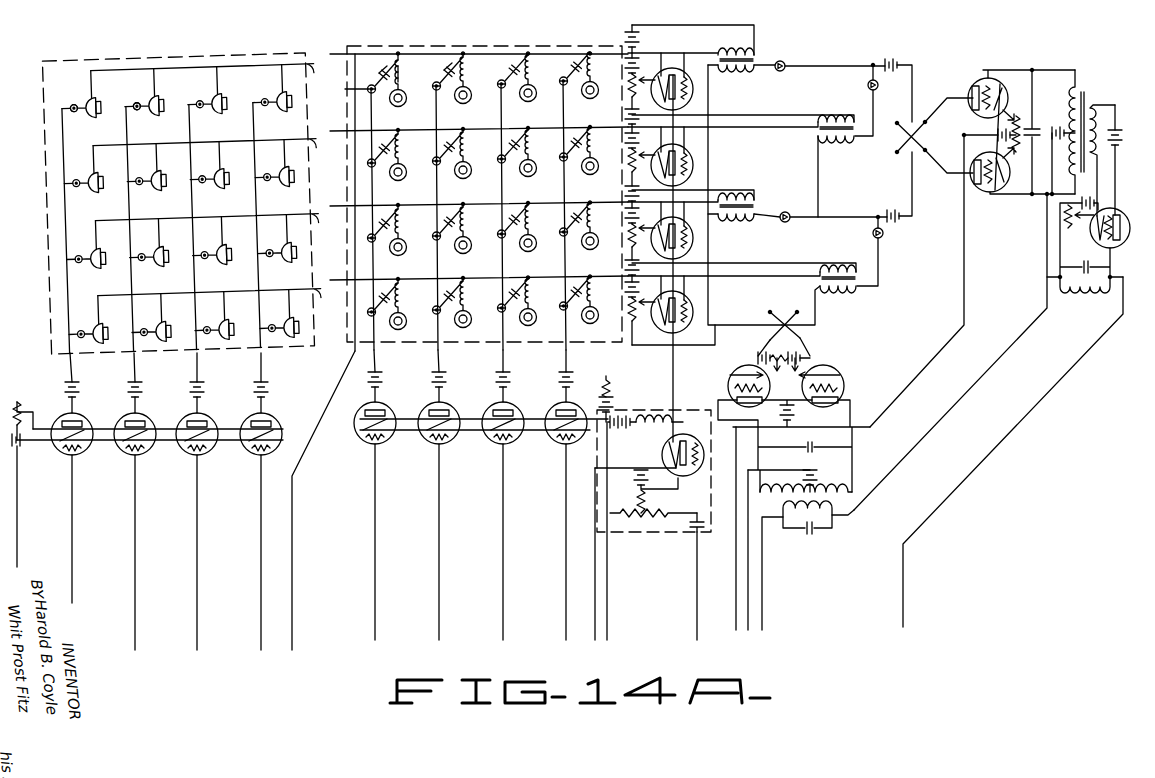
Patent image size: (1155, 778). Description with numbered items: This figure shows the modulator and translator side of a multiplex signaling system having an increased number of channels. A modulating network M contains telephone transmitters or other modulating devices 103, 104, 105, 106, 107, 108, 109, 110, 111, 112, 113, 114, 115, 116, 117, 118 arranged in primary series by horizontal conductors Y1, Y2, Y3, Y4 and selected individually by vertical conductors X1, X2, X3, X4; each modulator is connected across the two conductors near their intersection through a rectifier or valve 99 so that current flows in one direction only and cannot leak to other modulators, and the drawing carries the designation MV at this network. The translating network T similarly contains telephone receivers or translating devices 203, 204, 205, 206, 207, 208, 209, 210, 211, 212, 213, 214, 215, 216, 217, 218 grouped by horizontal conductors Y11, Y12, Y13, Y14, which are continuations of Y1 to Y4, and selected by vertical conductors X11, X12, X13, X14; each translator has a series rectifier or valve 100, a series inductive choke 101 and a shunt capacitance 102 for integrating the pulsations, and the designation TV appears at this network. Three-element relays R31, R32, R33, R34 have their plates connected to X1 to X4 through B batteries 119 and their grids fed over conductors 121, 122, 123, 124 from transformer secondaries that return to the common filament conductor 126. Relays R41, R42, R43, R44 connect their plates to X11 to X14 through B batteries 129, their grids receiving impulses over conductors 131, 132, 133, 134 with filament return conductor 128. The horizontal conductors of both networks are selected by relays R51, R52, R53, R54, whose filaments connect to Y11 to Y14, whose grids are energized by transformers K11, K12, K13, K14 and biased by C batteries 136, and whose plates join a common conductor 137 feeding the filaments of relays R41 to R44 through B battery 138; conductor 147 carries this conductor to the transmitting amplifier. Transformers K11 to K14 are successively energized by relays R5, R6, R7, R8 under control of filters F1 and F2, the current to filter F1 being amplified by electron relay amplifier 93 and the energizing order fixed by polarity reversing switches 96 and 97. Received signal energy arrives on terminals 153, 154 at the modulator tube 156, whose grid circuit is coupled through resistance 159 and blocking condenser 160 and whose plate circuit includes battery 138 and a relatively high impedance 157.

The modulating network M is at (184, 73).
The translating network T is at (482, 65).
The microphone terminal MV is at (67, 100).
The rectifier or valve 99 is at (142, 98).
The telephone transmitter 105 is at (88, 117).
The telephone transmitter 103 is at (151, 116).
The telephone transmitter 106 is at (213, 115).
The telephone transmitter 104 is at (276, 112).
The telephone transmitter 109 is at (86, 192).
The telephone transmitter 107 is at (151, 190).
The telephone transmitter 110 is at (216, 188).
The telephone transmitter 108 is at (279, 186).
The telephone transmitter 113 is at (86, 248).
The telephone transmitter 111 is at (149, 246).
The telephone transmitter 114 is at (212, 245).
The telephone transmitter 112 is at (277, 242).
The telephone transmitter 117 is at (88, 321).
The telephone transmitter 115 is at (151, 319).
The telephone transmitter 118 is at (214, 318).
The telephone transmitter 116 is at (279, 316).
The horizontal conductor Y3 is at (208, 76).
The horizontal conductor Y4 is at (210, 152).
The horizontal conductor Y1 is at (215, 227).
The horizontal conductor Y2 is at (220, 306).
The vertical conductor X3 is at (70, 364).
The vertical conductor X1 is at (135, 364).
The vertical conductor X4 is at (197, 364).
The vertical conductor X2 is at (261, 364).
The B battery 119 is at (80, 392).
The relay R33 is at (80, 453).
The relay R31 is at (143, 453).
The relay R34 is at (205, 453).
The relay R32 is at (268, 452).
The common filament return conductor 126 is at (17, 531).
The conductor 123 is at (72, 579).
The conductor 121 is at (135, 579).
The conductor 124 is at (197, 578).
The conductor 122 is at (261, 598).
The conductor 147 is at (292, 601).
The transmitter terminal TV is at (348, 91).
The shunt capacitance 102 is at (391, 64).
The series inductive choke 101 is at (403, 80).
The series rectifier or valve 100 is at (445, 75).
The telephone receiver 205 is at (391, 94).
The telephone receiver 203 is at (457, 92).
The telephone receiver 206 is at (520, 89).
The telephone receiver 204 is at (579, 84).
The telephone receiver 209 is at (393, 168).
The telephone receiver 207 is at (458, 167).
The telephone receiver 210 is at (522, 165).
The telephone receiver 208 is at (579, 159).
The telephone receiver 213 is at (394, 242).
The telephone receiver 211 is at (459, 241).
The telephone receiver 214 is at (522, 239).
The telephone receiver 212 is at (580, 235).
The telephone receiver 217 is at (387, 312).
The telephone receiver 215 is at (452, 311).
The telephone receiver 218 is at (517, 309).
The telephone receiver 216 is at (579, 307).
The horizontal conductor Y13 is at (598, 52).
The horizontal conductor Y14 is at (479, 121).
The horizontal conductor Y11 is at (600, 205).
The horizontal conductor Y12 is at (608, 275).
The vertical conductor X13 is at (374, 350).
The vertical conductor X11 is at (438, 350).
The vertical conductor X14 is at (503, 349).
The vertical conductor X12 is at (566, 348).
The B battery 129 is at (384, 381).
The relay R43 is at (383, 446).
The relay R41 is at (446, 446).
The relay R44 is at (510, 446).
The relay R42 is at (558, 447).
The conductor 133 is at (375, 571).
The conductor 131 is at (439, 569).
The conductor 134 is at (503, 567).
The conductor 132 is at (566, 587).
The C battery 136 is at (636, 40).
The relay R53 is at (690, 98).
The relay R54 is at (696, 162).
The relay R51 is at (696, 246).
The relay R52 is at (696, 302).
The transformer K13 is at (735, 72).
The transformer K14 is at (840, 143).
The transformer K11 is at (738, 218).
The transformer K12 is at (840, 292).
The polarity reversing switch 96 is at (906, 156).
The polarity reversing switch 97 is at (787, 312).
The relay R8 is at (975, 88).
The relay R7 is at (976, 195).
The filter circuit F1 is at (1083, 99).
The electron relay amplifier 93 is at (1094, 244).
The relay R5 is at (743, 370).
The relay R6 is at (843, 371).
The filter circuit F2 is at (845, 500).
The common conductor 137 is at (683, 373).
The B battery 138 is at (626, 412).
The high impedance 157 is at (648, 432).
The modulator tube 156 is at (662, 453).
The resistance 159 is at (647, 503).
The blocking condenser 160 is at (690, 530).
The common filament return conductor 128 is at (595, 571).
The output terminal 153 is at (607, 603).
The output terminal 154 is at (697, 599).